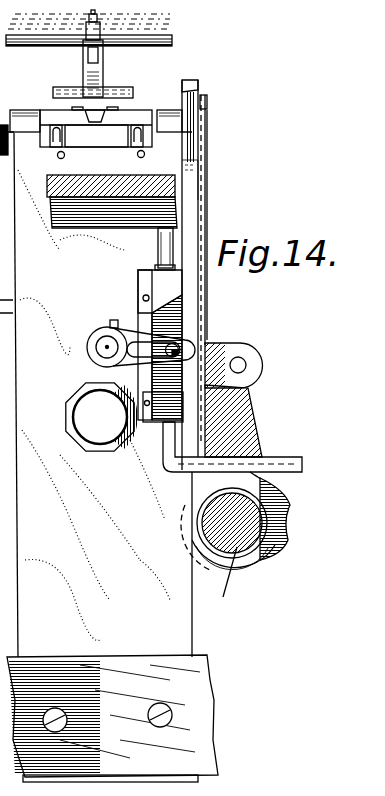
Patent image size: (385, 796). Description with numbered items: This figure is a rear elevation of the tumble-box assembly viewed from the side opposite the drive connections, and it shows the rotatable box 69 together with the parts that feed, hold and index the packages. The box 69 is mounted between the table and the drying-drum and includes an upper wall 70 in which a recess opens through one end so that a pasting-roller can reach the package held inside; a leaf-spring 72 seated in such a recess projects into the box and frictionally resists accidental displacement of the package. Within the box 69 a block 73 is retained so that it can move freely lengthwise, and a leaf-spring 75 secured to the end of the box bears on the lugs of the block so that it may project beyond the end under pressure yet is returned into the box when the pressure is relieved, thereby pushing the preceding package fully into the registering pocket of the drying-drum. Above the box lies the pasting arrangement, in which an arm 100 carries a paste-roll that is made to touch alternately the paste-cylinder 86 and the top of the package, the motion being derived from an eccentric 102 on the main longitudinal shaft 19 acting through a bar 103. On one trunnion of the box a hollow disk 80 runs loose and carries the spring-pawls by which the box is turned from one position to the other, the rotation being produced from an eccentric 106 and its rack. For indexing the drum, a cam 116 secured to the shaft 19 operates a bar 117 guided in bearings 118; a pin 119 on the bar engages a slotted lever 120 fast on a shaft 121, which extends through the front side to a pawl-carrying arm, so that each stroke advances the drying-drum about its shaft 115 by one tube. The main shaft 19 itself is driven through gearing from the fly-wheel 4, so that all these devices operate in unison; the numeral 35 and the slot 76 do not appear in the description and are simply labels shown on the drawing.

The paste-cylinder 86 is at (170, 36).
The arm 100 is at (88, 70).
The leaf-spring 72 is at (97, 115).
The upper wall 70 is at (50, 115).
The rotatable box 69 is at (107, 95).
The bar 103 is at (192, 80).
The hollow disk 80 is at (203, 118).
The block 73 is at (96, 135).
The leaf-spring 75 is at (57, 147).
The slot 76 is at (137, 147).
The bearings 118 is at (158, 282).
The slotted lever 120 is at (102, 327).
The shaft 121 is at (105, 350).
The pin 119 is at (180, 345).
The shaft 115 is at (101, 417).
The bar 117 is at (270, 467).
The cam 116 is at (293, 493).
The eccentric 102 is at (283, 553).
The main longitudinal shaft 19 is at (225, 585).
The eccentric 106 is at (257, 578).
The frame 35 is at (8, 426).
The fly-wheel 4 is at (5, 553).